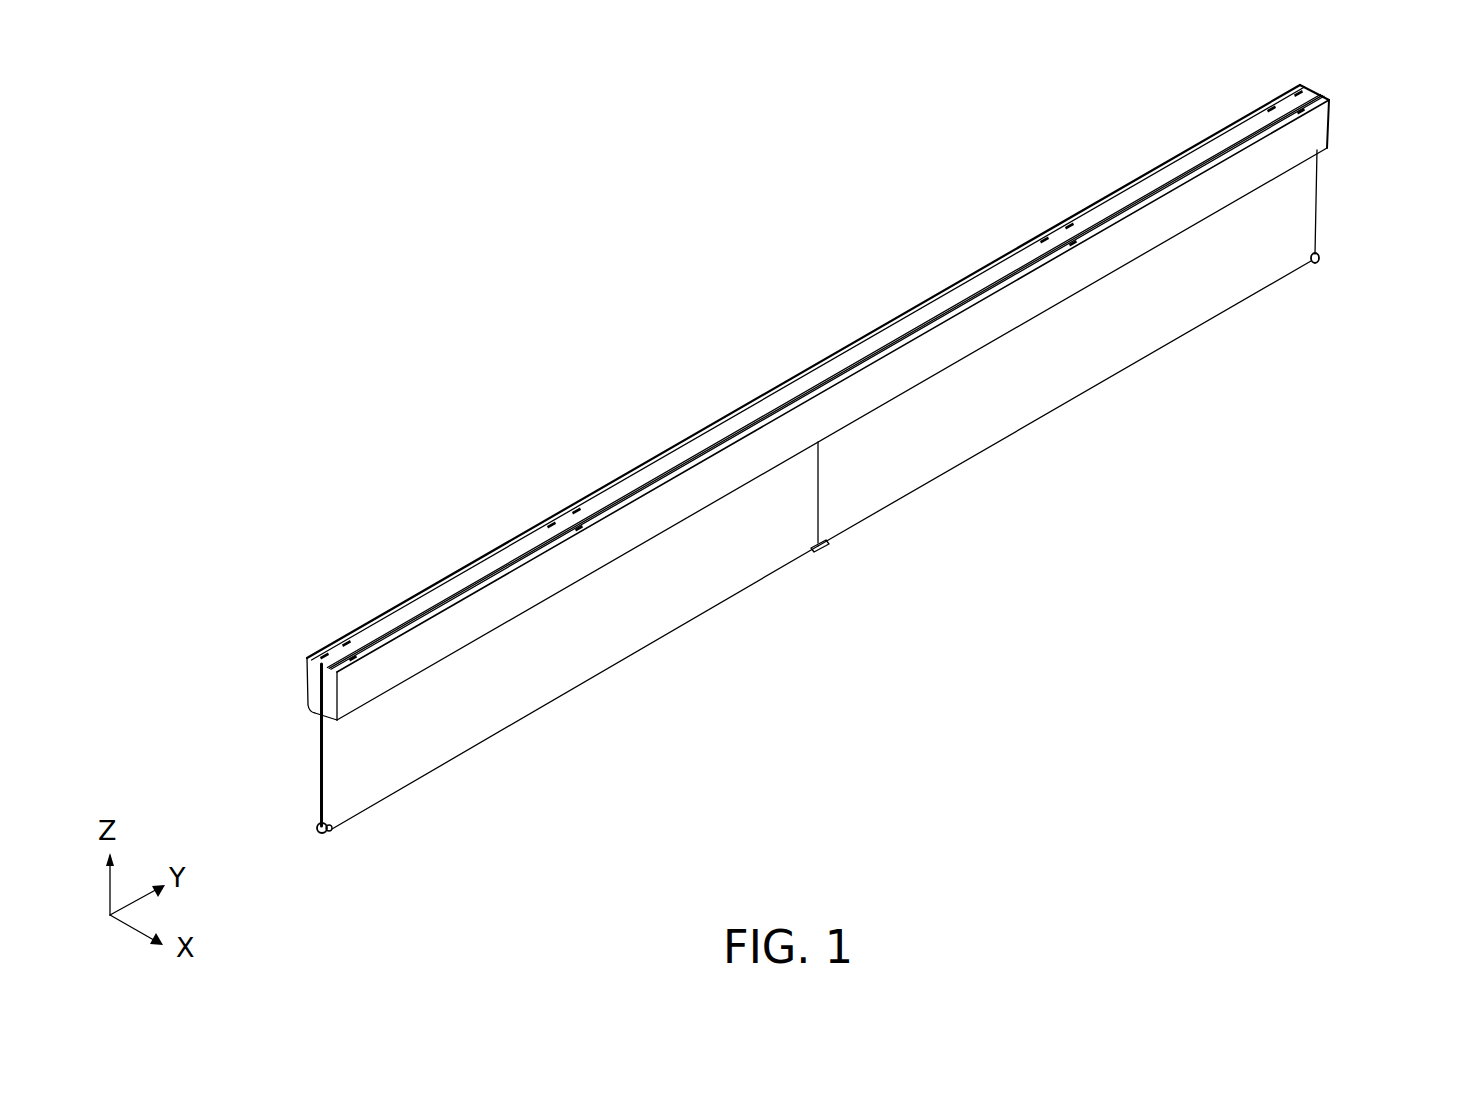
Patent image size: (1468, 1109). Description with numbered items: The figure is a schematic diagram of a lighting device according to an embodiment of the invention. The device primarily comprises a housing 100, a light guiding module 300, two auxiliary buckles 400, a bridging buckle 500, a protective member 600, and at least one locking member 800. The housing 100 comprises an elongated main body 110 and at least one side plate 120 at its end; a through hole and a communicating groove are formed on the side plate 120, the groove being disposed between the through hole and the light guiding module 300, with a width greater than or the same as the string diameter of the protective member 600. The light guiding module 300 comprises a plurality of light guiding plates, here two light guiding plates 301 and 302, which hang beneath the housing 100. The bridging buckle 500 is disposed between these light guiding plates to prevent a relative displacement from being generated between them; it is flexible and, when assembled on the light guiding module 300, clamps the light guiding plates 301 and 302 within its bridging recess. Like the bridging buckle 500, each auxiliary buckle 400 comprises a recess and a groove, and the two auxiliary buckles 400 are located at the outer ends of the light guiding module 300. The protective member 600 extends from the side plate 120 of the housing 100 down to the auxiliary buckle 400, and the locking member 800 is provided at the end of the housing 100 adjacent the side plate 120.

The housing 100 is at (763, 406).
The main body 110 is at (518, 553).
The side plate 120 is at (313, 693).
The locking member 800 is at (317, 675).
The light guiding module 300 is at (817, 517).
The light guiding plate 301 is at (597, 645).
The light guiding plate 302 is at (1040, 390).
The auxiliary buckle 400 is at (331, 831).
The bridging buckle 500 is at (828, 548).
The protective member 600 is at (316, 770).